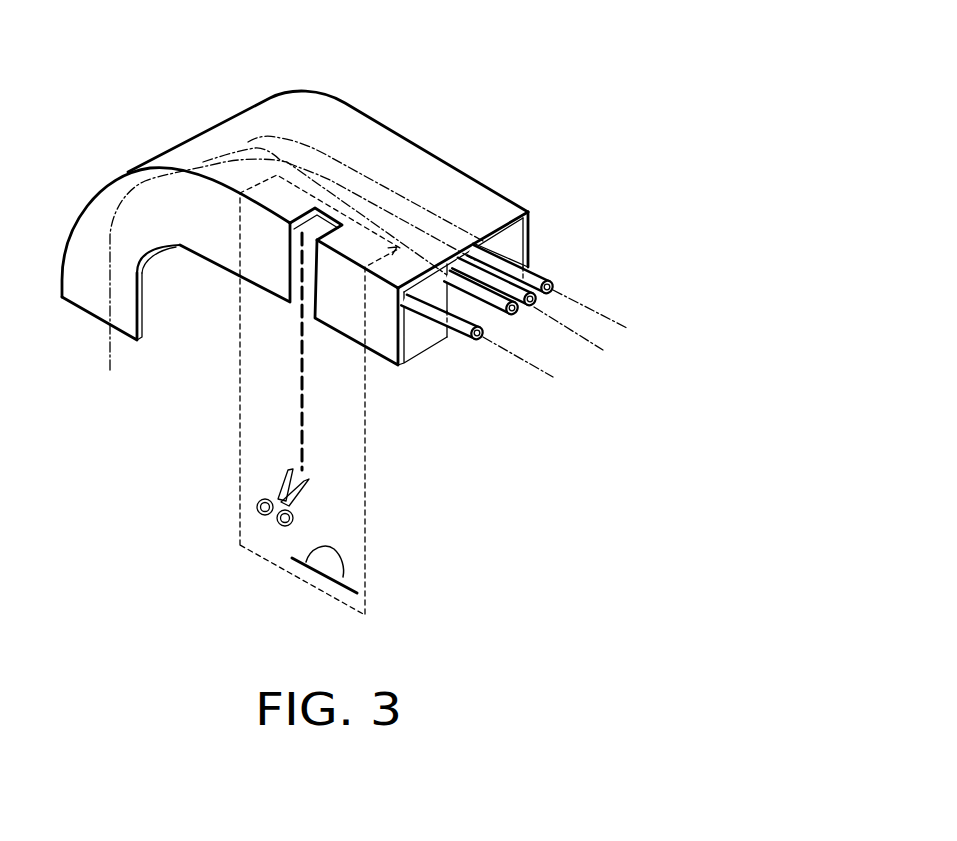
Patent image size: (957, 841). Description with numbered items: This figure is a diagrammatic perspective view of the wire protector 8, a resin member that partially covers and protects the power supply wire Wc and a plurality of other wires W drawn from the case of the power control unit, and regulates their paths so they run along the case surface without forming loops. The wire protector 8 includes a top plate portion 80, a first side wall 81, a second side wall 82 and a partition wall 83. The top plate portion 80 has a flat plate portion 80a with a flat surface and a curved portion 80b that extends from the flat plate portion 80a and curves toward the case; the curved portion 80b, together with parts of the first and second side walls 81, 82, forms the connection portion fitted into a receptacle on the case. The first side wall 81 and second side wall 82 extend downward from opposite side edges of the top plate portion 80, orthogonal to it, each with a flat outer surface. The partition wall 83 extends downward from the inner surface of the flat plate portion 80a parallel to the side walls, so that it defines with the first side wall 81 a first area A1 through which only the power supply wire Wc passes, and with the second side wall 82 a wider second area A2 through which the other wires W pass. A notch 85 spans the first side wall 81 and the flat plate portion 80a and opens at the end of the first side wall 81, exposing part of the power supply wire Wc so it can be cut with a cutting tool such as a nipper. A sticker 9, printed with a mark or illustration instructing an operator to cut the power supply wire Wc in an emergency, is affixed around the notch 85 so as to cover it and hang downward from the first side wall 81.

The wire protector 8 is at (443, 150).
The top plate portion 80 is at (307, 50).
The flat plate portion 80a is at (380, 168).
The curved portion 80b is at (237, 127).
The first side wall 81 is at (235, 248).
The second side wall 82 is at (528, 247).
The partition wall 83 is at (458, 332).
The notch 85 is at (305, 247).
The sticker 9 is at (241, 545).
The first area A1 is at (413, 340).
The second area A2 is at (508, 238).
The wires W is at (580, 358).
The power supply wire Wc is at (497, 346).